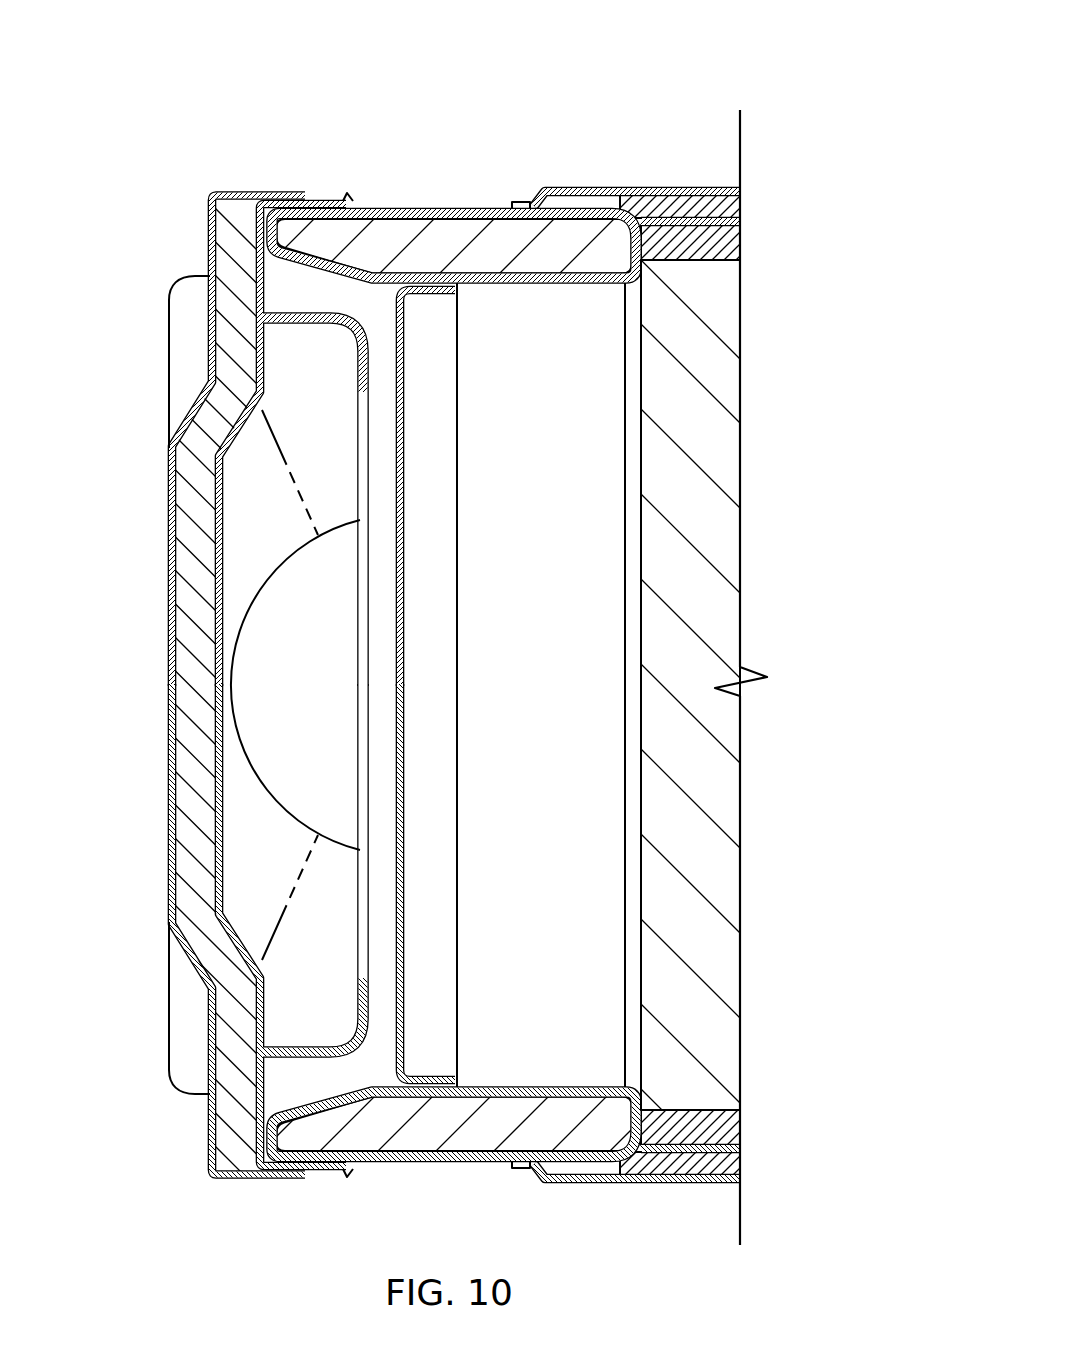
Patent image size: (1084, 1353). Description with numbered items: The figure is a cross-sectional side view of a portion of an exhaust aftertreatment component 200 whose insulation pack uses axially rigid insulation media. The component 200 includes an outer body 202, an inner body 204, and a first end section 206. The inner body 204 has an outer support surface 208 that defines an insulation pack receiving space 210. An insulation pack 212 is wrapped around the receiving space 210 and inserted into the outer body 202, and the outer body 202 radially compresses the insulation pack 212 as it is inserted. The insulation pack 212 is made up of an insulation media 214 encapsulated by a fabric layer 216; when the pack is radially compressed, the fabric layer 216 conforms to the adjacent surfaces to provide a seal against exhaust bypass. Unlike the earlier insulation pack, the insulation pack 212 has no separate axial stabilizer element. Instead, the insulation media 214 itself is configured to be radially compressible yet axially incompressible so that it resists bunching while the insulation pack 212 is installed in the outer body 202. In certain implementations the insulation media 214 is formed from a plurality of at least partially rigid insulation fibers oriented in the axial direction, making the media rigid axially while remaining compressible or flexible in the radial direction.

The exhaust aftertreatment component 200 is at (800, 58).
The outer body 202 is at (475, 200).
The inner body 204 is at (582, 643).
The first end section 206 is at (160, 612).
The outer support surface 208 is at (360, 273).
The insulation pack receiving space 210 is at (643, 280).
The insulation pack 212 is at (575, 232).
The insulation media 214 is at (547, 258).
The fabric layer 216 is at (640, 268).